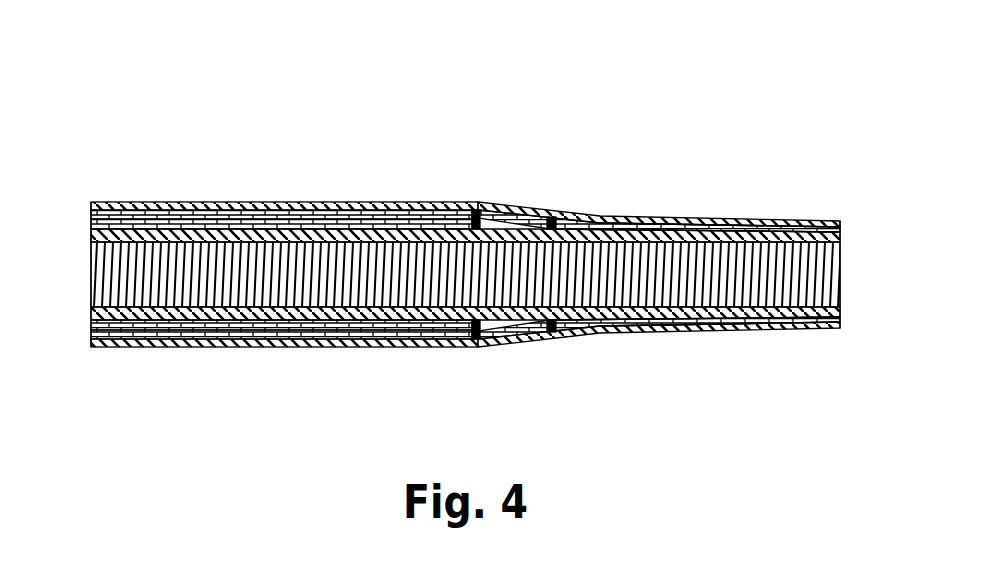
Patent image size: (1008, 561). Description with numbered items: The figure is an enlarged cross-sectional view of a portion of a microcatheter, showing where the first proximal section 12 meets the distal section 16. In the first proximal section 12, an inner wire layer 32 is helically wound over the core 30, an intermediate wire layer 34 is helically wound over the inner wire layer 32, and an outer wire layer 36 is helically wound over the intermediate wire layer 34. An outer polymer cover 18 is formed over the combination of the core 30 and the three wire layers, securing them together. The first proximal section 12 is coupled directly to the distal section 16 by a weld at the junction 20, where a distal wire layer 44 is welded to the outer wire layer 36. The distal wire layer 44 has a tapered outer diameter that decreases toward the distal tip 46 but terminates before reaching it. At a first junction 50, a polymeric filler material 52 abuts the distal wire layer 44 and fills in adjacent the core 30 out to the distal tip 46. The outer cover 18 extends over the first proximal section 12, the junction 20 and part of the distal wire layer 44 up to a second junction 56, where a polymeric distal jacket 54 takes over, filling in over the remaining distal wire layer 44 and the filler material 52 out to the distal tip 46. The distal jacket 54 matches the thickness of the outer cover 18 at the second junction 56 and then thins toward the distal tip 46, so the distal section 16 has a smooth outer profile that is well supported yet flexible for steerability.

The first proximal section 12 is at (246, 72).
The distal section 16 is at (605, 158).
The outer polymer cover 18 is at (152, 202).
The junction 20 is at (478, 339).
The core 30 is at (93, 247).
The inner wire layer 32 is at (91, 228).
The intermediate wire layer 34 is at (91, 217).
The outer wire layer 36 is at (91, 208).
The distal wire layer 44 is at (503, 211).
The distal tip 46 is at (840, 312).
The first junction 50 is at (623, 221).
The filler material 52 is at (713, 224).
The distal jacket 54 is at (669, 217).
The second junction 56 is at (553, 216).